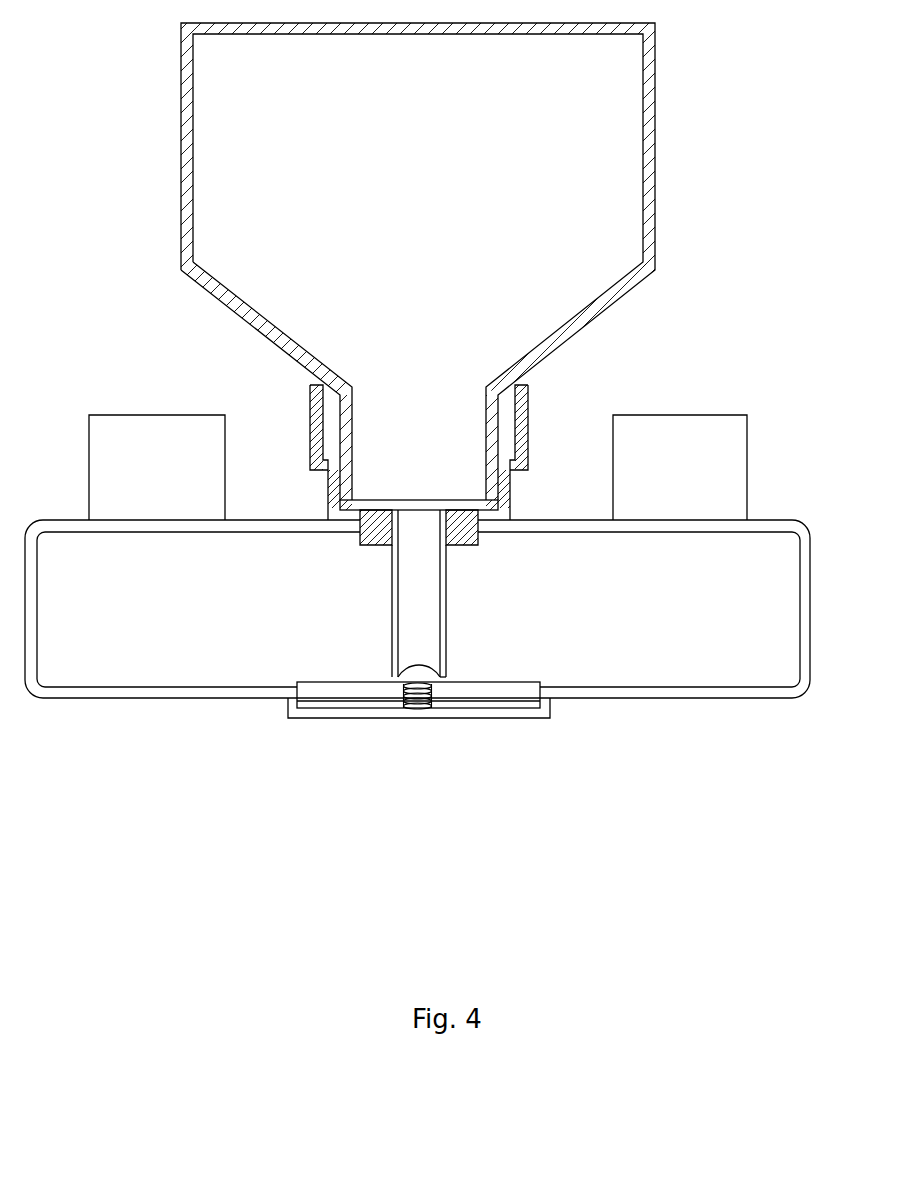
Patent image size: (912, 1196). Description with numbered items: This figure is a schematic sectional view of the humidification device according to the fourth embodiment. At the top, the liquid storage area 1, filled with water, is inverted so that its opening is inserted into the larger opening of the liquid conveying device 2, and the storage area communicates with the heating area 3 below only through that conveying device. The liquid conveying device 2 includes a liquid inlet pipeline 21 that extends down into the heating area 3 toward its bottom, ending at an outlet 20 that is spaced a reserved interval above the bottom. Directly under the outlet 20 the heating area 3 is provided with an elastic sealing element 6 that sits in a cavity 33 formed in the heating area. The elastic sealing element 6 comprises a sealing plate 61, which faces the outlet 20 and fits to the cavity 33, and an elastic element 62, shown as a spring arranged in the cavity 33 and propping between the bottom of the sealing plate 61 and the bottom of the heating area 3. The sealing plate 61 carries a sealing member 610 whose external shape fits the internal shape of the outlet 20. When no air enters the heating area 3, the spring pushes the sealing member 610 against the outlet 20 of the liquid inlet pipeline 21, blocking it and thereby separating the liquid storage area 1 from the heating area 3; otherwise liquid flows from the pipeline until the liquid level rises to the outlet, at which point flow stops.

The liquid storage area 1 is at (615, 98).
The liquid conveying device 2 is at (523, 403).
The heating area 3 is at (742, 610).
The outlet 20 is at (400, 673).
The liquid inlet pipeline 21 is at (417, 617).
The elastic sealing element 6 is at (358, 670).
The sealing plate 61 is at (348, 693).
The cavity 33 is at (373, 705).
The elastic element 62 is at (432, 705).
The sealing member 610 is at (428, 675).